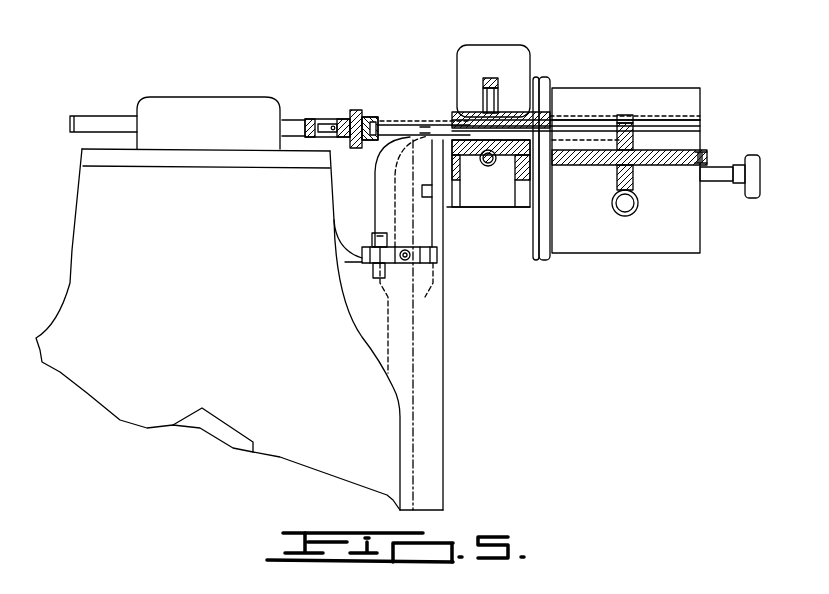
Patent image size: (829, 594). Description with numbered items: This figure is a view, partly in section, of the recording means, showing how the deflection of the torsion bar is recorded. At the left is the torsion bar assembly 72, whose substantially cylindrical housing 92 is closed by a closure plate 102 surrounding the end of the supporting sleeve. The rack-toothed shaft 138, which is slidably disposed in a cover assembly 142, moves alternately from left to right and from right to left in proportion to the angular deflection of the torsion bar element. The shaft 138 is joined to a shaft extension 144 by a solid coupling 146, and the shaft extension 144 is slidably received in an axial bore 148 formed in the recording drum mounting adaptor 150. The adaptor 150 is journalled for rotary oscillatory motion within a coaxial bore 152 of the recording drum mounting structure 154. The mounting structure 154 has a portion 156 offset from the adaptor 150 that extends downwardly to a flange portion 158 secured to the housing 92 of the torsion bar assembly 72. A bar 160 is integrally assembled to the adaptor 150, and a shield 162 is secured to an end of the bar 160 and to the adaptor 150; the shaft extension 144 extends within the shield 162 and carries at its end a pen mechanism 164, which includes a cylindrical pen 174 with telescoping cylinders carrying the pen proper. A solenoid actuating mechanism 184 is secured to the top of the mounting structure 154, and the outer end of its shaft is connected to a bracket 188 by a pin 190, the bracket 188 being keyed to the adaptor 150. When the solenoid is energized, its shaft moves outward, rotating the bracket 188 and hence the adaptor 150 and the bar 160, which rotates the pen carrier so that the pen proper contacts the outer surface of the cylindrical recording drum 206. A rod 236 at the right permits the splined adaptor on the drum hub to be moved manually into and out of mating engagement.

The torsion bar assembly 72 is at (222, 309).
The housing structure 92 is at (345, 262).
The closure plate 102 is at (85, 186).
The shaft 138 is at (304, 117).
The cover assembly 142 is at (250, 85).
The shaft extension 144 is at (424, 124).
The solid coupling 146 is at (360, 110).
The axial bore 148 is at (555, 117).
The recording drum mounting adaptor 150 is at (532, 173).
The coaxial bore 152 is at (455, 112).
The recording drum mounting structure 154 is at (458, 172).
The offset portion 156 is at (385, 177).
The flange portion 158 is at (437, 258).
The bar 160 is at (670, 166).
The shield 162 is at (673, 117).
The pen mechanism 164 is at (615, 180).
The cylindrical pen 174 is at (633, 210).
The solenoid actuating mechanism 184 is at (487, 56).
The bracket 188 is at (497, 100).
The pin 190 is at (497, 84).
The cylindrical recording drum 206 is at (682, 245).
The rod 236 is at (720, 172).